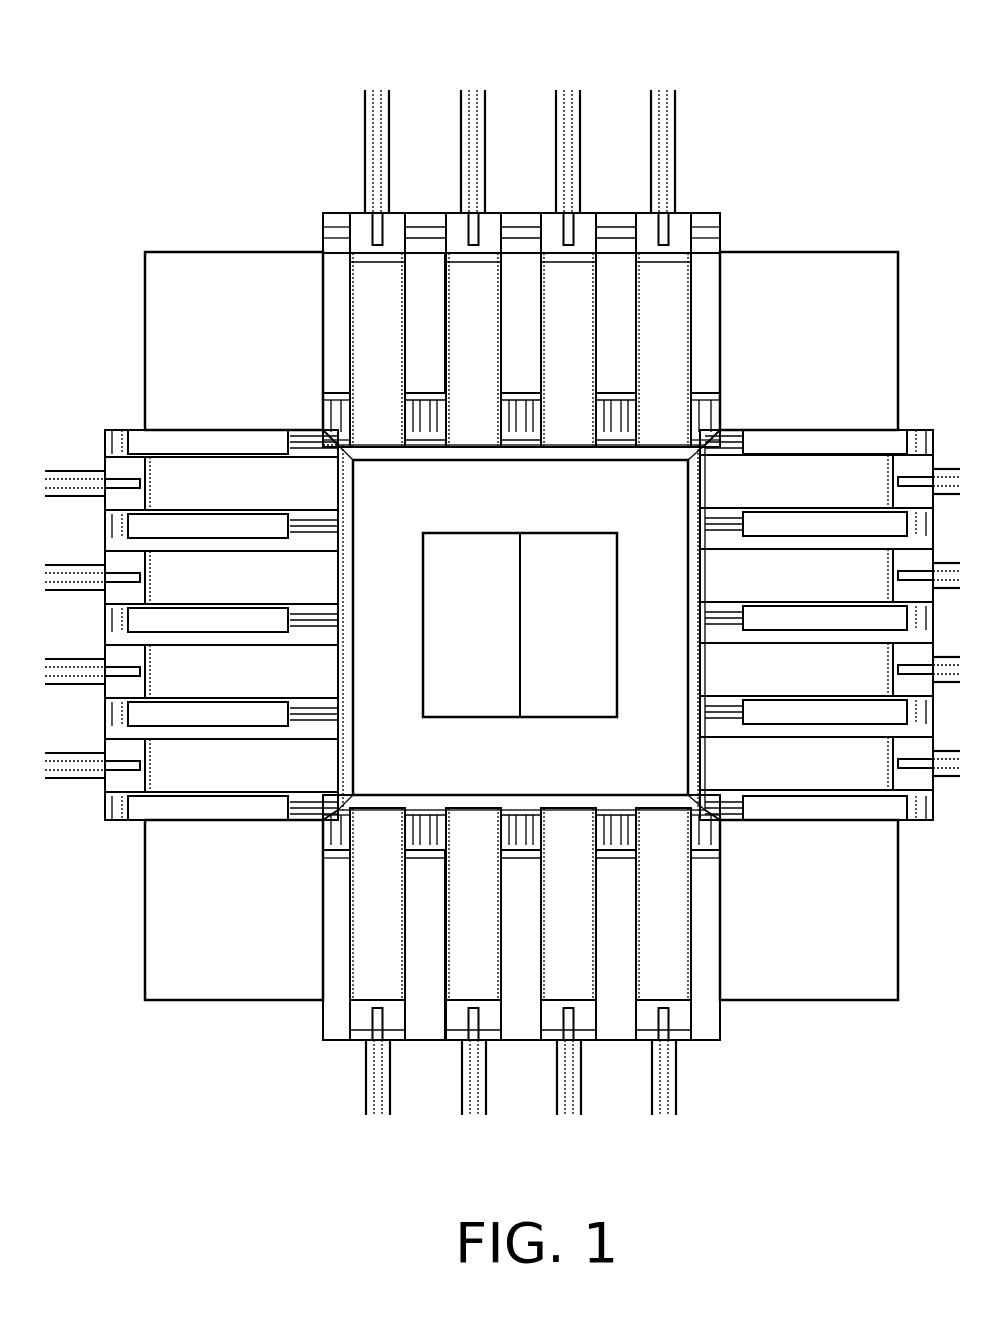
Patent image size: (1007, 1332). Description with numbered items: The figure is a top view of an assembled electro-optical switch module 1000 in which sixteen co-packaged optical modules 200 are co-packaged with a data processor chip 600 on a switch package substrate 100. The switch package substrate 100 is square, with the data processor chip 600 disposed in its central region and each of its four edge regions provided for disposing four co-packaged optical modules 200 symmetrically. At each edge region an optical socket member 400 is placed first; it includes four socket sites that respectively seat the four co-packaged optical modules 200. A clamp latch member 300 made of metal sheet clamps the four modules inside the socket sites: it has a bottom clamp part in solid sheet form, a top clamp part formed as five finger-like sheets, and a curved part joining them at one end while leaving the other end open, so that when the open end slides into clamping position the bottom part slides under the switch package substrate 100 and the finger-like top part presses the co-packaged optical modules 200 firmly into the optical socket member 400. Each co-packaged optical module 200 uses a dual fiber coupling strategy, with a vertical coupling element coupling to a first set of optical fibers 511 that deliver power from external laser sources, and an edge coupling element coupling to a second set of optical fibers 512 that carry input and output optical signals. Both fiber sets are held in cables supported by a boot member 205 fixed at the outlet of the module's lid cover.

The assembled electro-optical switch module 1000 is at (604, 48).
The switch package substrate 100 is at (175, 300).
The co-packaged optical module 200 is at (406, 340).
The boot member 205 is at (347, 213).
The clamp latch member 300 is at (323, 232).
The optical socket member 400 is at (322, 428).
The first set of optical fibers 511 is at (373, 125).
The second set of optical fibers 512 is at (365, 160).
The data processor chip 600 is at (498, 560).